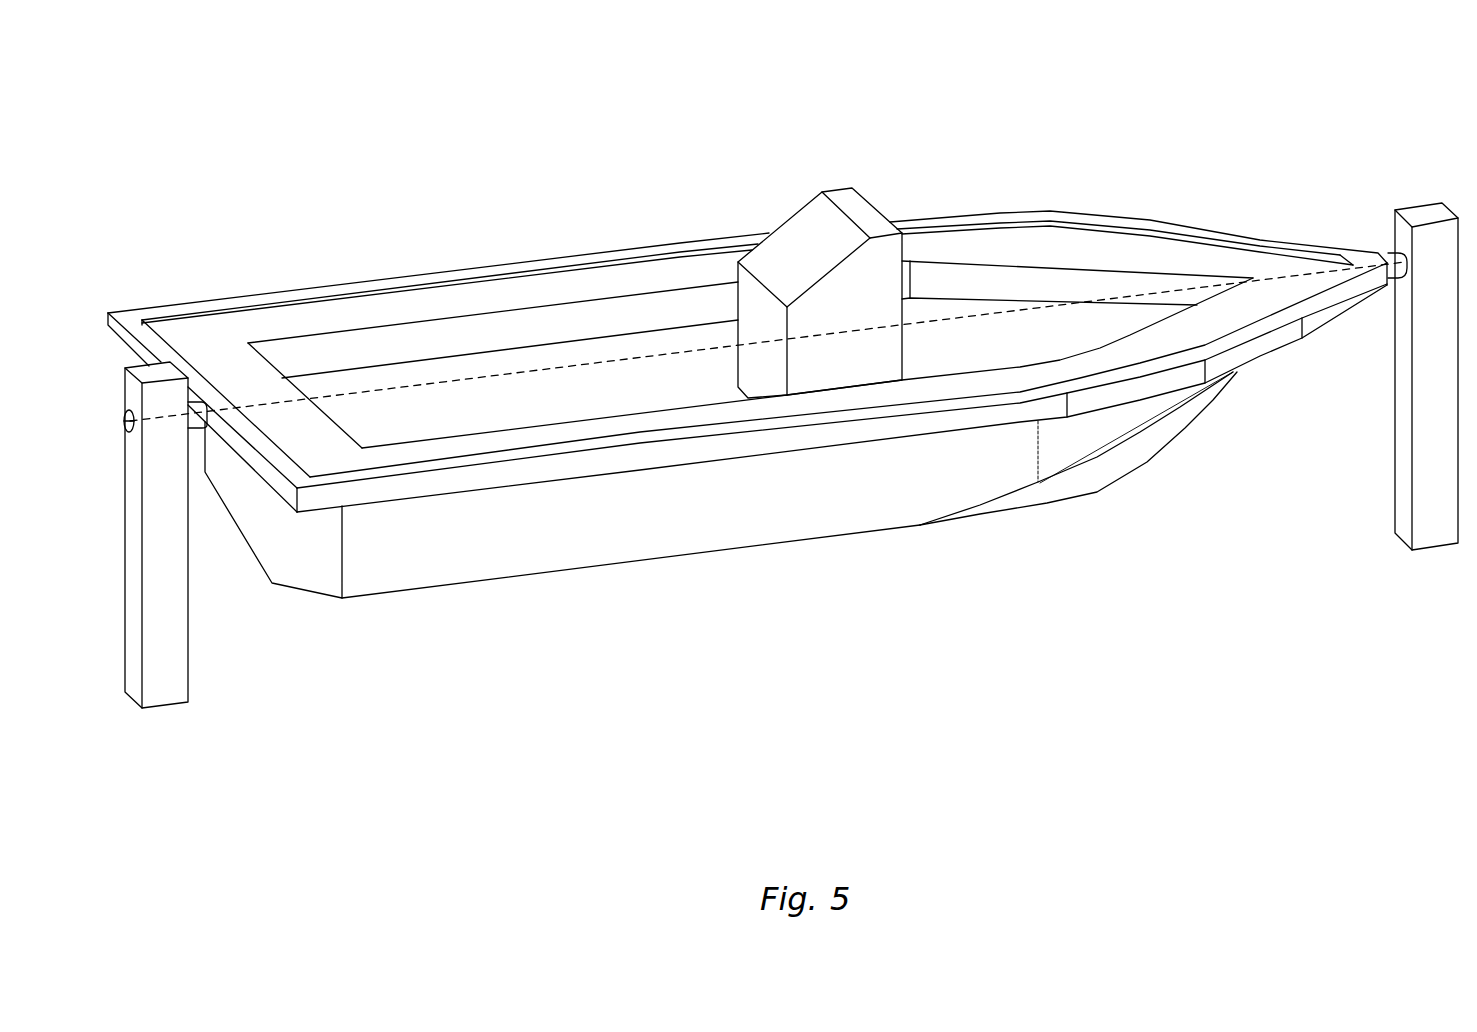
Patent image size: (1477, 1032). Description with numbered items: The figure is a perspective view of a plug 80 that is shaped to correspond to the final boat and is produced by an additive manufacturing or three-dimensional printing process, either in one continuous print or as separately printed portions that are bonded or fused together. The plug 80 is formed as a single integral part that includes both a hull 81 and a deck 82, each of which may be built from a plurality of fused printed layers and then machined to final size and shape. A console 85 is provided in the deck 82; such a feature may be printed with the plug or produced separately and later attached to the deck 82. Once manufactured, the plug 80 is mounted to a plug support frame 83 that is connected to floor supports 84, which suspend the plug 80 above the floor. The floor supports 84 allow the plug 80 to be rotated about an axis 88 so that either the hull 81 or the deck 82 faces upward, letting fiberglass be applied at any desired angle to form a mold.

The plug 80 is at (476, 633).
The hull 81 is at (792, 500).
The deck 82 is at (495, 372).
The plug support frame 83 is at (1038, 407).
The floor support 84 is at (157, 372).
The console 85 is at (799, 240).
The axis 88 is at (1398, 267).